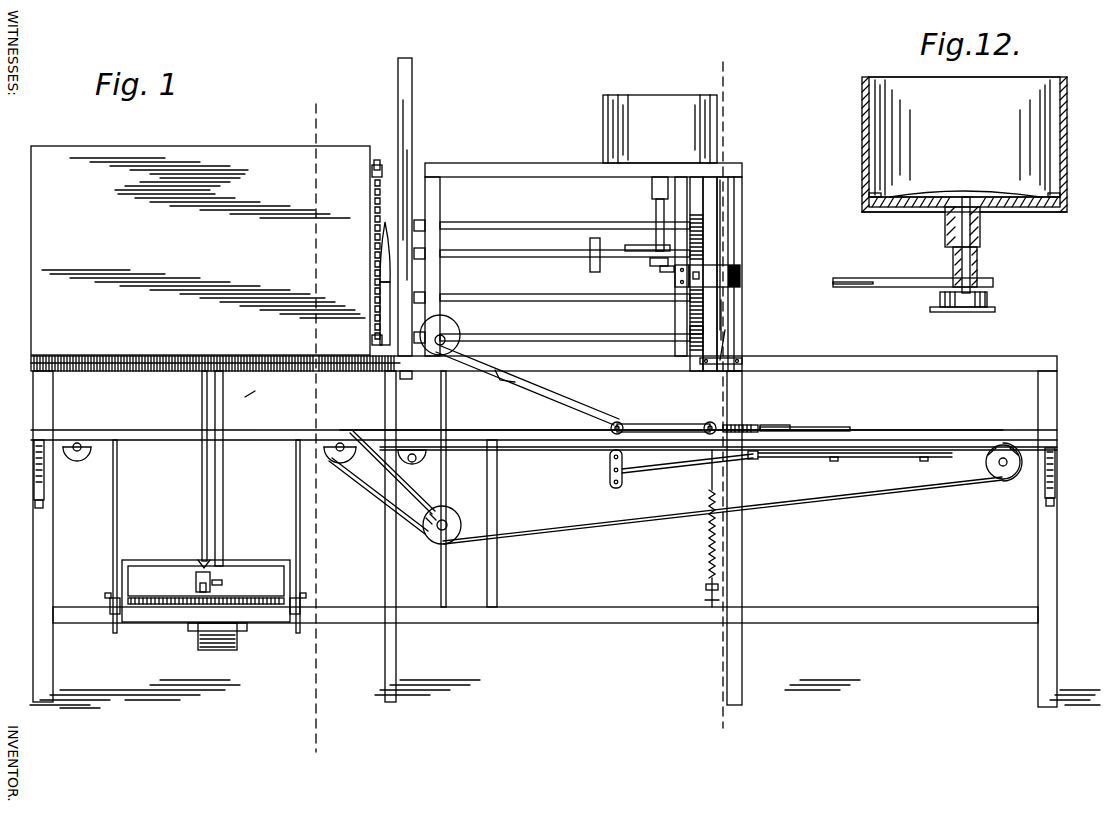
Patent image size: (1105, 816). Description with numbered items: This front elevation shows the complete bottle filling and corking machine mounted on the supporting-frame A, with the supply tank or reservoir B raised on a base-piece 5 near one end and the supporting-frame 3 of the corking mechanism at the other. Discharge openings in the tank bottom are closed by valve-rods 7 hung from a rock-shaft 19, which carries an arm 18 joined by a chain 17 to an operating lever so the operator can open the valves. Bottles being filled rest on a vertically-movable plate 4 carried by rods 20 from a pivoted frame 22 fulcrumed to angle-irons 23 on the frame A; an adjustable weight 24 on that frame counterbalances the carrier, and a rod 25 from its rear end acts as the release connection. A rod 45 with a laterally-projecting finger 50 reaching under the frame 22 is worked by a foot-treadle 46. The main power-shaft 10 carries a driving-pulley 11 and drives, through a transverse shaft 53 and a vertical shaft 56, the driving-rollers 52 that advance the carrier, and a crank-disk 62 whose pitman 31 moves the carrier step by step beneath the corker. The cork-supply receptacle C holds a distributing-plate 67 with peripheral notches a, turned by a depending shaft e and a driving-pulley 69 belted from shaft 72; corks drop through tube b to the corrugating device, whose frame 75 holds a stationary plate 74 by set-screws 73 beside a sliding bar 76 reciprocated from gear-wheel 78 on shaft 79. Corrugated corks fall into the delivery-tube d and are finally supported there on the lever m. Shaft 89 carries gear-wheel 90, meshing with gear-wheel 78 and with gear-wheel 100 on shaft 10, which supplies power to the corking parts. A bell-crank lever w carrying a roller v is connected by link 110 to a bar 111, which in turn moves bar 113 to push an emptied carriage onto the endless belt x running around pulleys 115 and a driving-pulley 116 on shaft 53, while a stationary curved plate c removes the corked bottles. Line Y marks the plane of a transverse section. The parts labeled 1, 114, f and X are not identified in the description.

In FIG. 1, the frame legs 1 is at (542, 495).
In FIG. 1, the supporting-frame of the corking mechanism 3 is at (583, 258).
In FIG. 1, the vertically-movable support or plate 4 is at (792, 452).
In FIG. 1, the base-piece 5 is at (259, 386).
In FIG. 1, the valve-rods 7 is at (728, 345).
In FIG. 1, the main power-shaft 10 is at (598, 353).
In FIG. 1, the driving-pulley 11 is at (415, 321).
In FIG. 1, the chain or link 17 is at (388, 220).
In FIG. 1, the arm 18 is at (383, 165).
In FIG. 1, the rock-shaft 19 is at (373, 180).
In FIG. 1, the rods 20 is at (206, 536).
In FIG. 1, the pivoted frame 22 is at (206, 584).
In FIG. 1, the angle-irons 23 is at (111, 598).
In FIG. 1, the weight 24 is at (195, 580).
In FIG. 1, the rod 25 is at (205, 512).
In FIG. 1, the pitman 31 is at (529, 390).
In FIG. 1, the rod 45 is at (228, 468).
In FIG. 1, the foot-treadle 46 is at (217, 644).
In FIG. 1, the finger 50 is at (222, 583).
In FIG. 1, the driving-rollers 52 is at (335, 468).
In FIG. 1, the transverse shaft 53 is at (444, 530).
In FIG. 1, the vertical shaft 56 is at (469, 489).
In FIG. 1, the crank-disk 62 is at (440, 335).
In FIG. 12, the distributing-plate 67 is at (916, 212).
In FIG. 1, the driving-pulley 69 is at (662, 274).
In FIG. 12, the driving-pulley 69 is at (920, 295).
In FIG. 1, the shaft 72 is at (755, 216).
In FIG. 1, the set-screws 73 is at (714, 276).
In FIG. 1, the stationary corrugating plate 74 is at (762, 272).
In FIG. 1, the stationary horizontal frame 75 is at (673, 280).
In FIG. 1, the slide plate or bar 76 is at (649, 267).
In FIG. 1, the gear-wheel 78 is at (700, 255).
In FIG. 1, the shaft 79 is at (552, 255).
In FIG. 1, the shaft 89 is at (552, 294).
In FIG. 1, the gear-wheel 90 is at (690, 300).
In FIG. 1, the gear-wheel 100 is at (690, 330).
In FIG. 1, the link 110 is at (690, 466).
In FIG. 1, the longitudinal bar or rod 111 is at (855, 459).
In FIG. 1, the bar 113 is at (865, 440).
In FIG. 1, the pulley 114 is at (412, 464).
In FIG. 1, the pulleys 115 is at (994, 462).
In FIG. 1, the driving-pulley 116 is at (438, 538).
In FIG. 1, the supporting-frame A is at (565, 532).
In FIG. 1, the supply tank or reservoir B is at (200, 250).
In FIG. 1, the cork-supply receptacle C is at (660, 129).
In FIG. 12, the cork-supply receptacle C is at (964, 144).
In FIG. 12, the peripheral notches a is at (862, 212).
In FIG. 1, the vertical tube b is at (720, 192).
In FIG. 1, the stationary curved plate c is at (747, 419).
In FIG. 1, the delivery-tube d is at (720, 318).
In FIG. 12, the central depending shaft e is at (978, 247).
In FIG. 12, the curved plate f is at (985, 192).
In FIG. 1, the lever m is at (725, 353).
In FIG. 1, the roller v is at (706, 423).
In FIG. 1, the bell-crank lever w is at (610, 469).
In FIG. 1, the endless belt x is at (675, 487).
In FIG. 1, the section line X is at (720, 397).
In FIG. 1, the section line Y Y is at (311, 433).